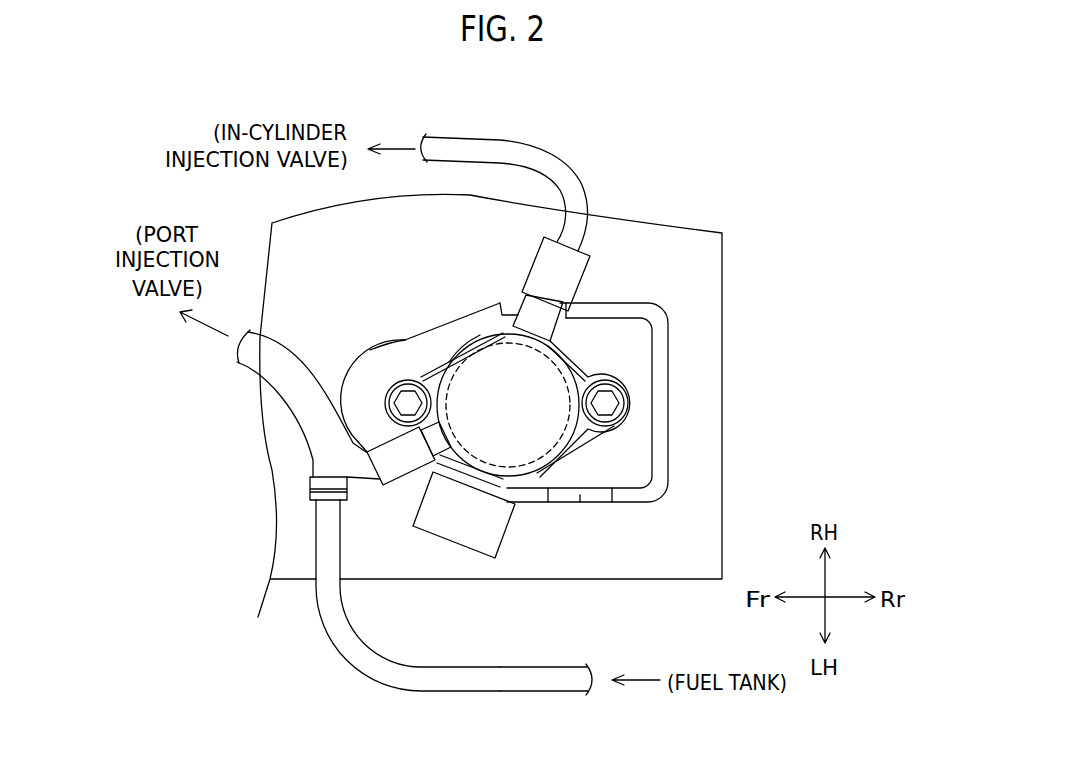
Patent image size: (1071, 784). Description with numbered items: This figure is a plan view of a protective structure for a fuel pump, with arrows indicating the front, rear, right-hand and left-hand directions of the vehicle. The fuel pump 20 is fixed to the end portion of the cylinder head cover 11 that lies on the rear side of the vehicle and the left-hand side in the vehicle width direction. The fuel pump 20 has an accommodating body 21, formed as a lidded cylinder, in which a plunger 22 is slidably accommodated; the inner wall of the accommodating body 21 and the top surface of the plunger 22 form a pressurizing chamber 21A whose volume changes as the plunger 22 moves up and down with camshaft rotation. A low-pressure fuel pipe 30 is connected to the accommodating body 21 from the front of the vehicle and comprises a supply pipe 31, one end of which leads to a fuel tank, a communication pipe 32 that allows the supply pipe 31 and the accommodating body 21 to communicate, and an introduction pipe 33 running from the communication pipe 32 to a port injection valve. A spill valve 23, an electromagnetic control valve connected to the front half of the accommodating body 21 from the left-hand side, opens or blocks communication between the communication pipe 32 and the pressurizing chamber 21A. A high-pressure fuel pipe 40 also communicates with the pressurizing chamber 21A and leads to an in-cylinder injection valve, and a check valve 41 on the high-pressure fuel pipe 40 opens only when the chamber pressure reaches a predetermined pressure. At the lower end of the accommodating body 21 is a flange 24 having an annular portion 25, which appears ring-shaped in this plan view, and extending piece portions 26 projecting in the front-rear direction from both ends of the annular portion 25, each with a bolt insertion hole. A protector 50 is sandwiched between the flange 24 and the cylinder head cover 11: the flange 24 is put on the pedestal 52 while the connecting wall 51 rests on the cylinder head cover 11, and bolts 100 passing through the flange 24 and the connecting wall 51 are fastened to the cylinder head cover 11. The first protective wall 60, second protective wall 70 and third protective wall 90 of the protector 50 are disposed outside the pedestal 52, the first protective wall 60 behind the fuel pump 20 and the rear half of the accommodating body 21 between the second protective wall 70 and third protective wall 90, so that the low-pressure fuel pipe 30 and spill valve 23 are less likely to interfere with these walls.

The cylinder head cover 11 is at (690, 232).
The fuel pump 20 is at (398, 266).
The accommodating body 21 is at (470, 346).
The pressurizing chamber 21A is at (493, 362).
The plunger 22 is at (476, 328).
The spill valve 23 is at (503, 540).
The flange 24 is at (425, 357).
The annular portion 25 is at (563, 351).
The extending piece portions 26 is at (383, 396).
The low-pressure fuel pipe 30 is at (344, 650).
The supply pipe 31 is at (481, 668).
The communication pipe 32 is at (310, 482).
The introduction pipe 33 is at (292, 415).
The high-pressure fuel pipe 40 is at (498, 137).
The check valve 41 is at (582, 283).
The protector 50 is at (639, 417).
The connecting wall 51 is at (640, 450).
The pedestal 52 is at (578, 447).
The first protective wall 60 is at (660, 410).
The second protective wall 70 is at (595, 504).
The third protective wall 90 is at (632, 304).
The bolts 100 is at (408, 398).